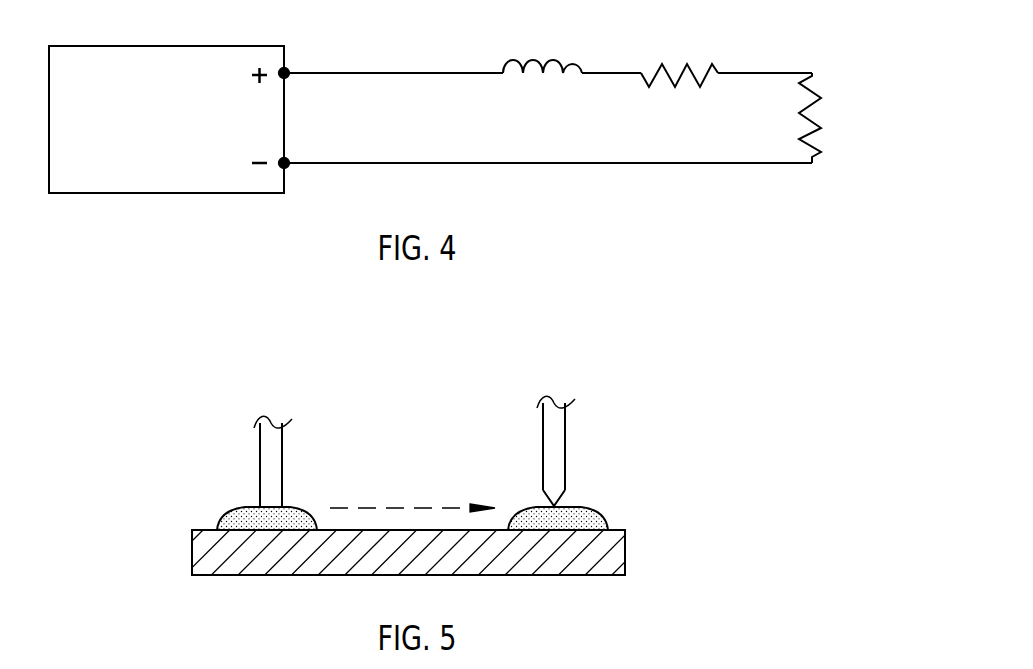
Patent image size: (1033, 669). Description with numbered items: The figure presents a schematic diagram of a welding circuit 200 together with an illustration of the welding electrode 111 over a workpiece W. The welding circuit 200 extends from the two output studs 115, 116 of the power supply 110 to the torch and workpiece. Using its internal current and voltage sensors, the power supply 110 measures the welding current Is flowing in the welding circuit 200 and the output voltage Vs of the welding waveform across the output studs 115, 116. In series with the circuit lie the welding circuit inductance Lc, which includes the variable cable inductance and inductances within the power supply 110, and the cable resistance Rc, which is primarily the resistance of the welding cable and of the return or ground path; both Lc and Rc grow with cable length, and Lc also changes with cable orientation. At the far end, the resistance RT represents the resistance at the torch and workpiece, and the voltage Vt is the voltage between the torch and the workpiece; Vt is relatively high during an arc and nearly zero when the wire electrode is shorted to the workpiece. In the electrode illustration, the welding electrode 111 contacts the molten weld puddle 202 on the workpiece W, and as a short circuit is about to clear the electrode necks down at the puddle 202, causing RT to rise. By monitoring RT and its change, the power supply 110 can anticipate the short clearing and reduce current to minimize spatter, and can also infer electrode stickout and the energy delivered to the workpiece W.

In FIG. 4, the power supply 110 is at (102, 46).
In FIG. 4, the output stud 115 is at (288, 67).
In FIG. 4, the output stud 116 is at (284, 171).
In FIG. 4, the welding circuit 200 is at (607, 81).
In FIG. 4, the welding circuit inductance Lc is at (548, 62).
In FIG. 4, the welding cable resistance Rc is at (684, 66).
In FIG. 4, the torch and workpiece resistance RT is at (816, 125).
In FIG. 4, the welding current Is is at (470, 63).
In FIG. 4, the output voltage Vs is at (358, 86).
In FIG. 4, the torch-to-workpiece voltage Vt is at (757, 86).
In FIG. 5, the welding electrode 111 is at (283, 466).
In FIG. 5, the molten weld puddle 202 is at (228, 515).
In FIG. 5, the workpiece W is at (626, 558).